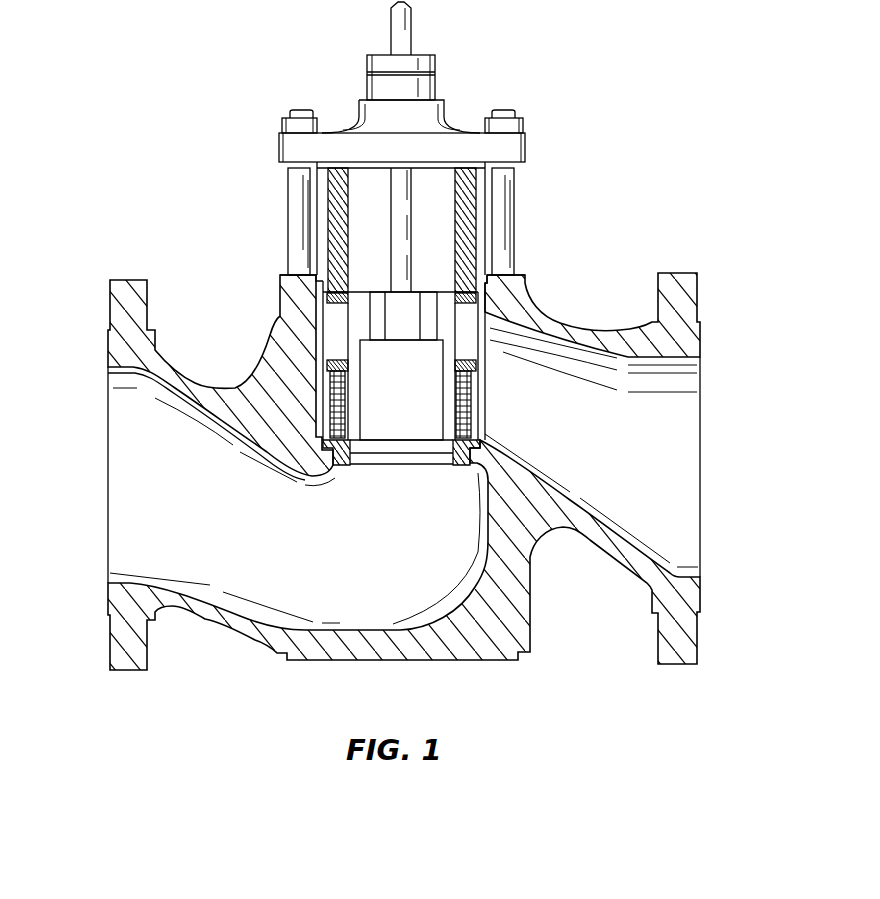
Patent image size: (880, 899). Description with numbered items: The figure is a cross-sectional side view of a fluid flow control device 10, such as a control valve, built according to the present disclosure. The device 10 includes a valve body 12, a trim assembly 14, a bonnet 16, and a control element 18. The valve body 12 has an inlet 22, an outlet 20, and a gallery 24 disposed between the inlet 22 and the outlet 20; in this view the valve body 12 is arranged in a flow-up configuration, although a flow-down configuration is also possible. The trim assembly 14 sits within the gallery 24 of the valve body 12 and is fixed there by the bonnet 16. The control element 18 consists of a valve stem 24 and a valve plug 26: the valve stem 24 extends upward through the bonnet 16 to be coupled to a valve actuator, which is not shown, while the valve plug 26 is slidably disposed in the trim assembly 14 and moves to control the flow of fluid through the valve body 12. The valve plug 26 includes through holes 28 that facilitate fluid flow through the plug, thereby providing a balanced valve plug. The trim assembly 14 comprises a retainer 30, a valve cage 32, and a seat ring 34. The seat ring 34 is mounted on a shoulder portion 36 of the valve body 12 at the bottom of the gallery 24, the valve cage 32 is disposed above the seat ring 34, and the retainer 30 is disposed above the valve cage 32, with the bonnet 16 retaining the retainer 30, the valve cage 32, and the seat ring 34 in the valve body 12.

The fluid flow control device 10 is at (624, 156).
The valve body 12 is at (686, 265).
The trim assembly 14 is at (320, 328).
The bonnet 16 is at (452, 106).
The control element 18 is at (412, 232).
The outlet 20 is at (697, 425).
The inlet 22 is at (118, 408).
The valve stem 24 is at (400, 188).
The valve plug 26 is at (379, 302).
The through holes 28 is at (360, 303).
The retainer 30 is at (480, 178).
The valve cage 32 is at (488, 343).
The seat ring 34 is at (460, 475).
The shoulder portion 36 is at (326, 467).